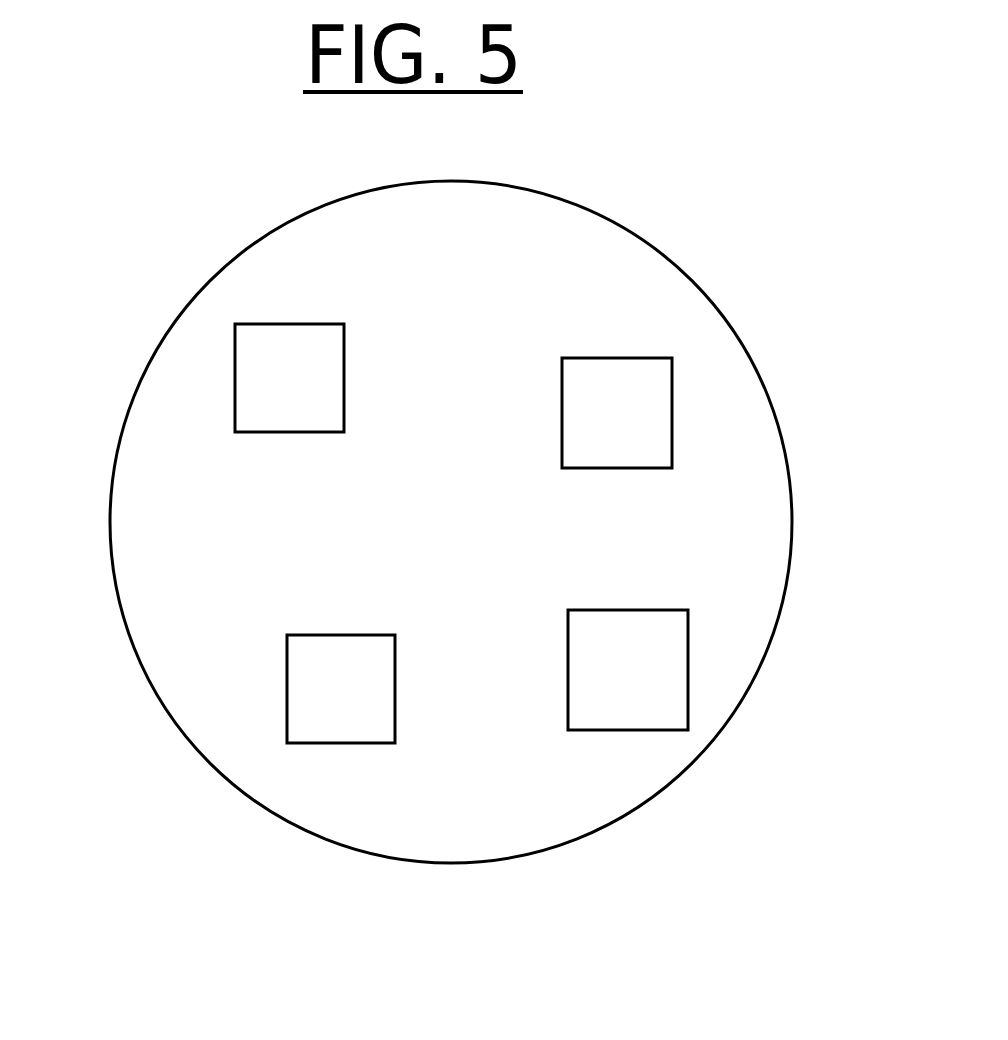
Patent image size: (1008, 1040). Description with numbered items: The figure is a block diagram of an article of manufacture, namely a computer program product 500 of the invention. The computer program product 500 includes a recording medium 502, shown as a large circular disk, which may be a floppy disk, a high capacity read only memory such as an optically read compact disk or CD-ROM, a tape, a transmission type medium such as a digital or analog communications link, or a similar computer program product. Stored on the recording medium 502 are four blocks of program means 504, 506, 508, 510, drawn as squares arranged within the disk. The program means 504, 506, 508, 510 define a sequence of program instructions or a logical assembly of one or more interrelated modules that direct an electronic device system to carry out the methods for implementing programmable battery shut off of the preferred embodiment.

The computer program product 500 is at (750, 288).
The recording medium 502 is at (156, 320).
The program means 504 is at (617, 413).
The program means 506 is at (628, 670).
The program means 508 is at (341, 689).
The program means 510 is at (289, 378).